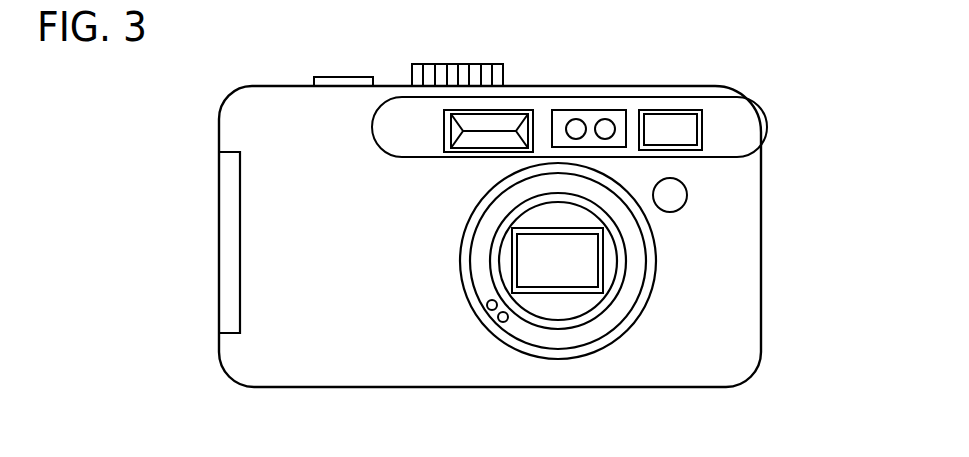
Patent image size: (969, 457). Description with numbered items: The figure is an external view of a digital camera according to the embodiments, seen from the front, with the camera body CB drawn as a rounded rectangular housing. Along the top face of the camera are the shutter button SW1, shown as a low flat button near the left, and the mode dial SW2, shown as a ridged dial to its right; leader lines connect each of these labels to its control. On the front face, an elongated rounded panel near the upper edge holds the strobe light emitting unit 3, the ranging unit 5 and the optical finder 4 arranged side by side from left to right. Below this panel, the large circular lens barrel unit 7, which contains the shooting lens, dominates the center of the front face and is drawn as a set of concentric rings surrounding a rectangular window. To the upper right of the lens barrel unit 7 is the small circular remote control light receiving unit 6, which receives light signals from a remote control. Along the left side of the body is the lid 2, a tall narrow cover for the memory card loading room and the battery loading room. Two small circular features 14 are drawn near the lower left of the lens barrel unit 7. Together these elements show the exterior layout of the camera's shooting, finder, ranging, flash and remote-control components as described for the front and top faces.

The camera body CB is at (761, 137).
The lid 2 is at (229, 218).
The shutter button SW1 is at (344, 77).
The mode dial SW2 is at (462, 64).
The strobe light emitting unit 3 is at (510, 122).
The optical finder 4 is at (672, 110).
The ranging unit 5 is at (600, 110).
The remote control light receiving unit 6 is at (677, 193).
The lens barrel unit 7 is at (567, 307).
The lens barrel lock pins 14 is at (503, 322).